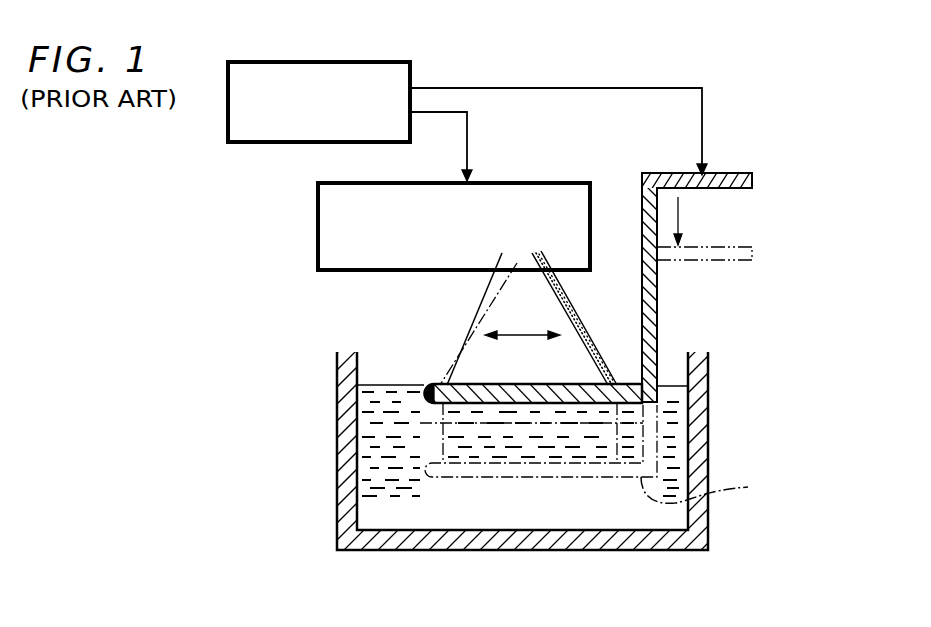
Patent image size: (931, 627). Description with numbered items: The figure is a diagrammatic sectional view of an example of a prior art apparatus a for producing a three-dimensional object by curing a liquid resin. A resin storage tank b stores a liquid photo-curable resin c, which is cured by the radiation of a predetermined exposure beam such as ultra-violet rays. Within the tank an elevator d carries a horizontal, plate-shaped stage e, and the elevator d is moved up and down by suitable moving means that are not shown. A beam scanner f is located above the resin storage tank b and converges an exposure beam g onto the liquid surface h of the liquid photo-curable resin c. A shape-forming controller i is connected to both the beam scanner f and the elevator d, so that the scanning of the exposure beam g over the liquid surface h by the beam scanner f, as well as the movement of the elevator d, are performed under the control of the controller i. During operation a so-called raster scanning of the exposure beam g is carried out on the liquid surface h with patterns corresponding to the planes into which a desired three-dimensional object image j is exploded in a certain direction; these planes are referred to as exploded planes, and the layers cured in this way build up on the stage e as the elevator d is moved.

The shape-forming apparatus a is at (724, 125).
The resin storage tank b is at (337, 378).
The liquid photo-curable resin c is at (380, 456).
The elevator d is at (753, 182).
The stage e is at (628, 398).
The beam scanner f is at (318, 228).
The exposure beam g is at (478, 305).
The liquid surface h is at (393, 385).
The shape-forming controller i is at (371, 62).
The three-dimensional object image j is at (443, 440).